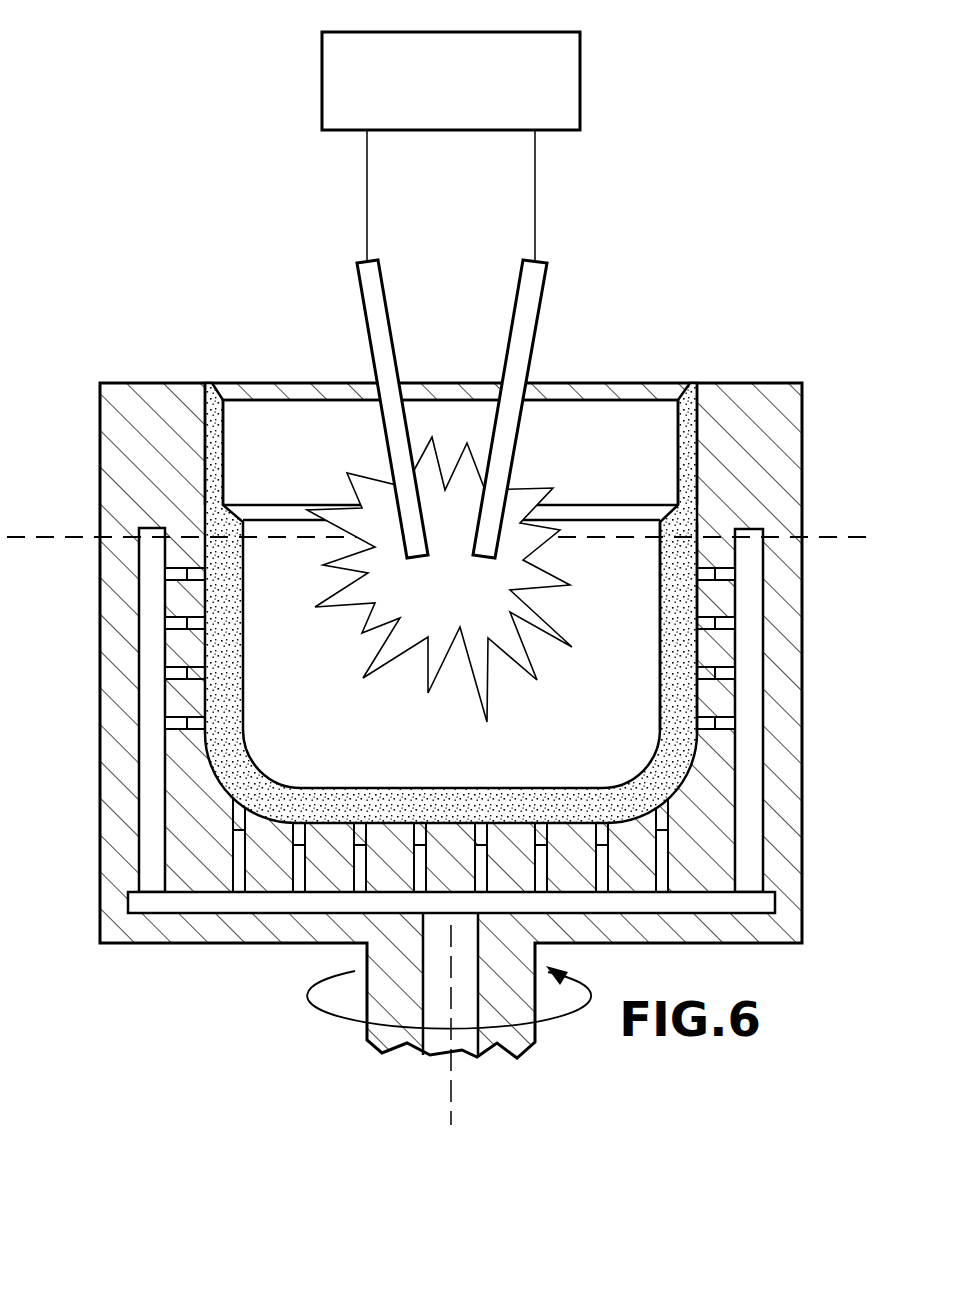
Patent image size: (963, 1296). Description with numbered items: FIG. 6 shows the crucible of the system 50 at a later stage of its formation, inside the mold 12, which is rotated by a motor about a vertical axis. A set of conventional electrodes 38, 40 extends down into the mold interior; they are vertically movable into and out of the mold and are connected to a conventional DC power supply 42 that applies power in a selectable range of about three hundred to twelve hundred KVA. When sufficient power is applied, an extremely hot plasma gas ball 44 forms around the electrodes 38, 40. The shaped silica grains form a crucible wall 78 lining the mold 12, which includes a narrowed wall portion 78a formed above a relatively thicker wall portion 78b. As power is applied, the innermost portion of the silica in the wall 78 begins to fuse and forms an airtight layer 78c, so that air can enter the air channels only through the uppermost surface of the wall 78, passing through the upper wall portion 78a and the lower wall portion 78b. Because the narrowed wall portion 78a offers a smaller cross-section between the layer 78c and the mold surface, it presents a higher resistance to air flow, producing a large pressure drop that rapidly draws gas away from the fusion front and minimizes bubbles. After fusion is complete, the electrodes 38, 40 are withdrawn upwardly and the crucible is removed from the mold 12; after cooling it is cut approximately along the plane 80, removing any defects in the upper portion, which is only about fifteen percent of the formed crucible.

The mold 12 is at (803, 422).
The electrode 38 is at (386, 300).
The electrode 40 is at (504, 343).
The DC power supply 42 is at (470, 94).
The plasma gas ball 44 is at (378, 653).
The system for making crucibles 50 is at (130, 265).
The crucible wall 78 is at (451, 603).
The narrowed wall portion 78a is at (680, 440).
The thicker wall portion 78b is at (660, 620).
The airtight layer 78c is at (227, 440).
The plane 80 is at (58, 532).